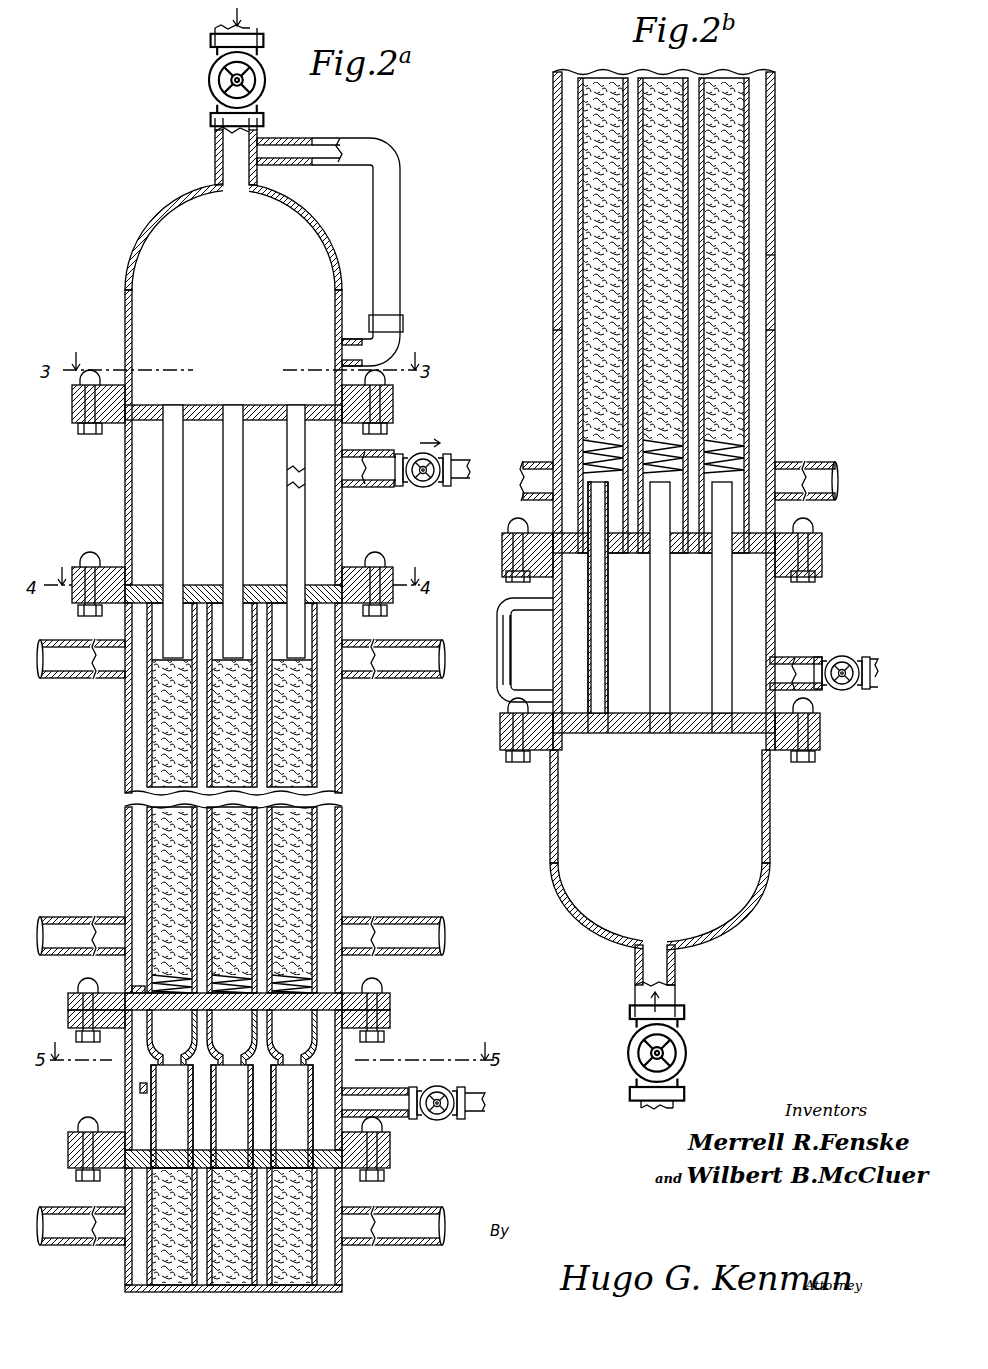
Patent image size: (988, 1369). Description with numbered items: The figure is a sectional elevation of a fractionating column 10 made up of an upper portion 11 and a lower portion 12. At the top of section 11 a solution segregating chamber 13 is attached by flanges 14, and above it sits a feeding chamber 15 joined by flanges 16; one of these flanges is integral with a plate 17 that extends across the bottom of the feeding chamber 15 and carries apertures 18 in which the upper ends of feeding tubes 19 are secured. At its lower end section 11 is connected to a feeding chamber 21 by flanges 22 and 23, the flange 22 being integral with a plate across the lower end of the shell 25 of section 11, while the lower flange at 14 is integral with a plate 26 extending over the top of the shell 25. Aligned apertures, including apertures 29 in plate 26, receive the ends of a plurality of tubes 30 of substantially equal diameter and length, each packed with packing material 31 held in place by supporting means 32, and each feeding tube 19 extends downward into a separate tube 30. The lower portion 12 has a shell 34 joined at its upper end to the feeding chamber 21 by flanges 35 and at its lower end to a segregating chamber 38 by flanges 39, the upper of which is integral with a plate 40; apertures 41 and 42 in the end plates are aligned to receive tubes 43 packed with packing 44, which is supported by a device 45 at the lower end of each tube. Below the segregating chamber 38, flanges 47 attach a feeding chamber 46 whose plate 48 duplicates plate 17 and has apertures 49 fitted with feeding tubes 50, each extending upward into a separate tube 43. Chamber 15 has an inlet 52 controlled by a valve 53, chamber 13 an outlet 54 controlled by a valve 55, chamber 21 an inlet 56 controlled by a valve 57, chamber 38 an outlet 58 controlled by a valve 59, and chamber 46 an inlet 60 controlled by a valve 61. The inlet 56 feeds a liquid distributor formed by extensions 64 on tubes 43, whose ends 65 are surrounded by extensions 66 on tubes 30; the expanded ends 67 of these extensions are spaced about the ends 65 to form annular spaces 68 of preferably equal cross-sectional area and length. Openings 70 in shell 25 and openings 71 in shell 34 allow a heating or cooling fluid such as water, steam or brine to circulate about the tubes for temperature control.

In FIG. 2A, the column 10 is at (116, 804).
In FIG. 2B, the column 10 is at (787, 331).
In FIG. 2A, the upper portion 11 is at (352, 772).
In FIG. 2B, the lower portion 12 is at (785, 206).
In FIG. 2A, the solution segregating chamber 13 is at (140, 492).
In FIG. 2A, the flanges 14 is at (393, 600).
In FIG. 2A, the feeding chamber 15 is at (160, 263).
In FIG. 2A, the flanges 16 is at (72, 403).
In FIG. 2A, the plate 17 is at (213, 405).
In FIG. 2A, the apertures 18 is at (296, 412).
In FIG. 2A, the feeding tubes 19 is at (287, 525).
In FIG. 2A, the feeding chamber 21 is at (345, 1090).
In FIG. 2A, the flange 22 is at (390, 998).
In FIG. 2A, the flange 23 is at (390, 1020).
In FIG. 2A, the shell 25 is at (342, 832).
In FIG. 2A, the plate 26 is at (205, 585).
In FIG. 2A, the apertures 29 is at (158, 598).
In FIG. 2A, the tubes 30 is at (147, 841).
In FIG. 2A, the packing material 31 is at (165, 758).
In FIG. 2A, the packing supporting means 32 is at (302, 946).
In FIG. 2A, the shell 34 is at (342, 1290).
In FIG. 2B, the shell 34 is at (777, 262).
In FIG. 2A, the flanges 35 is at (68, 1148).
In FIG. 2B, the segregating chamber 38 is at (570, 645).
In FIG. 2B, the flanges 39 is at (823, 548).
In FIG. 2B, the plate 40 is at (742, 562).
In FIG. 2A, the apertures 41 is at (242, 1152).
In FIG. 2B, the apertures 42 is at (672, 555).
In FIG. 2A, the tubes 43 is at (316, 1268).
In FIG. 2B, the tubes 43 is at (752, 160).
In FIG. 2A, the packing 44 is at (165, 1257).
In FIG. 2B, the packing 44 is at (728, 118).
In FIG. 2B, the packing supporting device 45 is at (737, 430).
In FIG. 2B, the feeding chamber 46 is at (745, 820).
In FIG. 2B, the flanges 47 is at (822, 722).
In FIG. 2B, the plate 48 is at (577, 735).
In FIG. 2B, the apertures 49 is at (672, 733).
In FIG. 2B, the feeding tubes 50 is at (670, 651).
In FIG. 2A, the inlet 52 is at (215, 150).
In FIG. 2A, the valve 53 is at (207, 78).
In FIG. 2A, the outlet 54 is at (371, 478).
In FIG. 2A, the valve 55 is at (447, 452).
In FIG. 2A, the inlet 56 is at (378, 1110).
In FIG. 2A, the valve 57 is at (452, 1122).
In FIG. 2B, the outlet 58 is at (848, 658).
In FIG. 2B, the valve 59 is at (790, 670).
In FIG. 2B, the inlet 60 is at (678, 992).
In FIG. 2B, the valve 61 is at (690, 1052).
In FIG. 2A, the extensions 64 is at (212, 1133).
In FIG. 2A, the ends 65 is at (156, 1070).
In FIG. 2A, the extensions 66 is at (110, 992).
In FIG. 2A, the expanded ends 67 is at (142, 1078).
In FIG. 2A, the annular spaces 68 is at (140, 1085).
In FIG. 2A, the openings 70 is at (96, 672).
In FIG. 2A, the openings 71 is at (62, 1218).
In FIG. 2B, the openings 71 is at (541, 468).